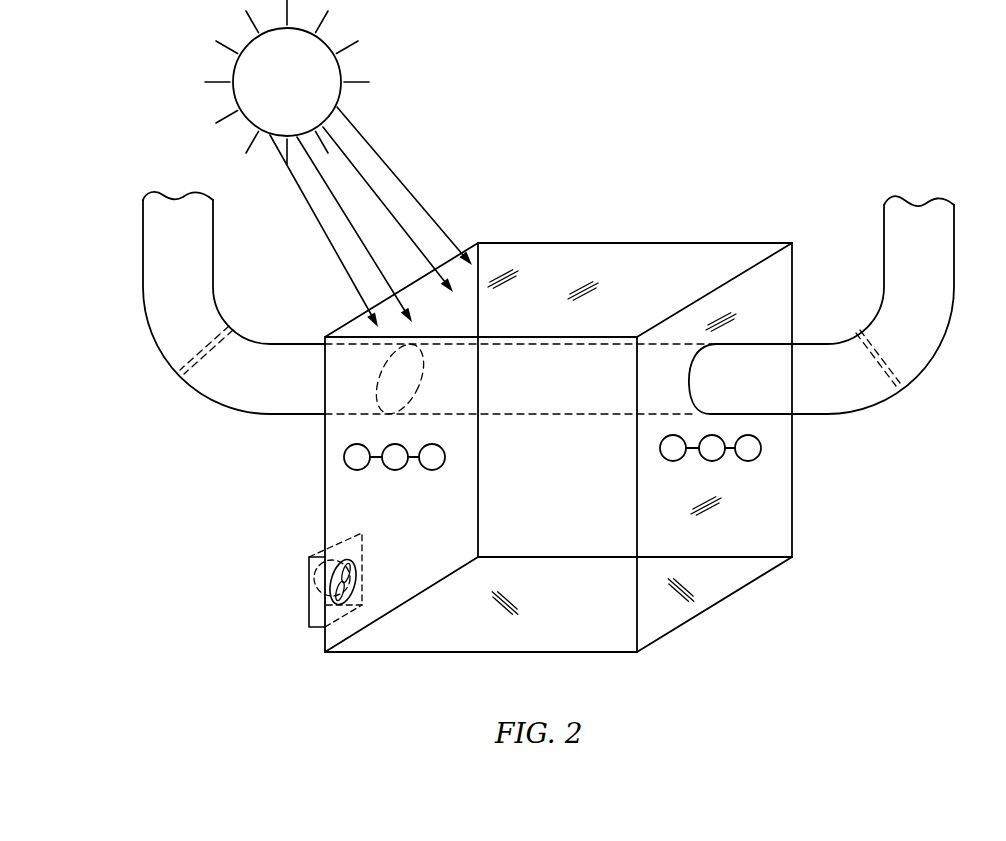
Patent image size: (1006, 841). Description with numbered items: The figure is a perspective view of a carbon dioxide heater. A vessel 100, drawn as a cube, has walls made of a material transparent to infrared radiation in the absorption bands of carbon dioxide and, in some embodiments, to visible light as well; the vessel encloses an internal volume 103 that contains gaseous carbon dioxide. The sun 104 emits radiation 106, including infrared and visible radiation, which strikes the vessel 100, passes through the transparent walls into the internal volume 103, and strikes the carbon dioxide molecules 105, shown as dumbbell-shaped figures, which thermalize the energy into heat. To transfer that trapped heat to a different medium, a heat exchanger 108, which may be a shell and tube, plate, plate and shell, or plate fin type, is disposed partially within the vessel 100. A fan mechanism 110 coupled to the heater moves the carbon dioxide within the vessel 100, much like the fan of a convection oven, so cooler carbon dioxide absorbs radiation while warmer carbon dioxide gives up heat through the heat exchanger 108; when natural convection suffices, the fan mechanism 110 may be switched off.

The vessel 100 is at (792, 460).
The internal volume 103 is at (778, 530).
The sun 104 is at (306, 96).
The carbon dioxide molecules 105 is at (368, 484).
The radiation 106 is at (383, 150).
The heat exchanger 108 is at (935, 350).
The fan mechanism 110 is at (347, 612).